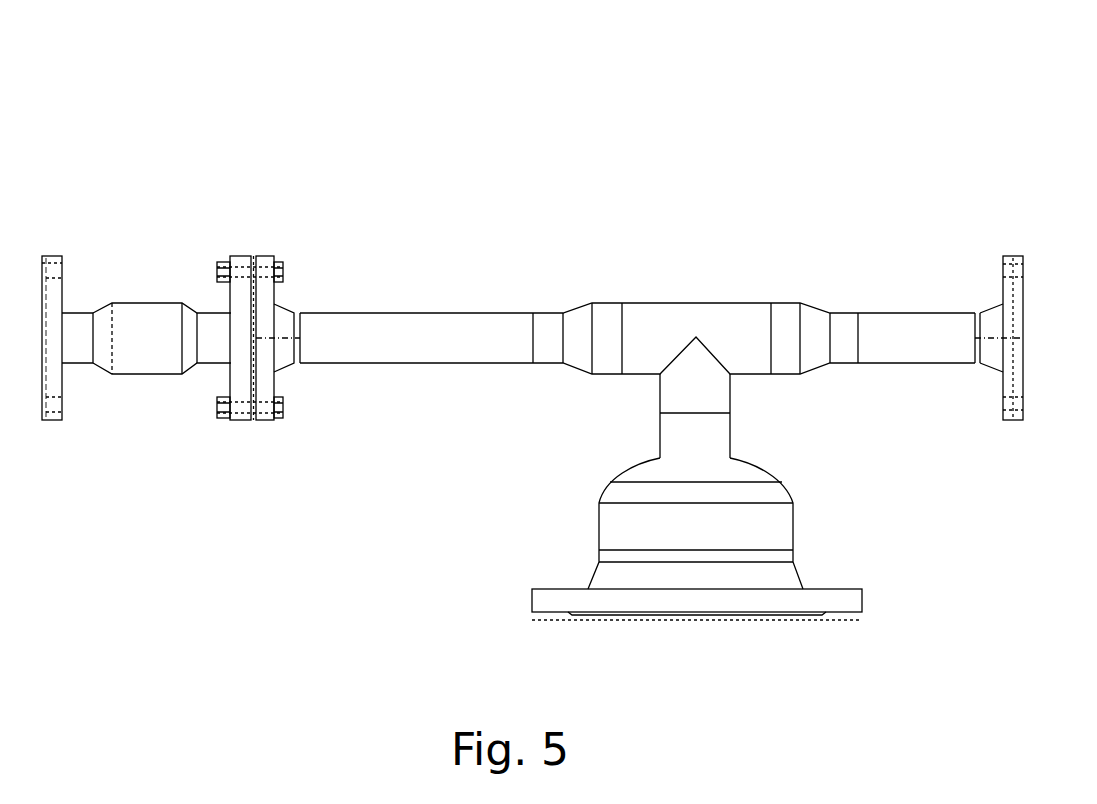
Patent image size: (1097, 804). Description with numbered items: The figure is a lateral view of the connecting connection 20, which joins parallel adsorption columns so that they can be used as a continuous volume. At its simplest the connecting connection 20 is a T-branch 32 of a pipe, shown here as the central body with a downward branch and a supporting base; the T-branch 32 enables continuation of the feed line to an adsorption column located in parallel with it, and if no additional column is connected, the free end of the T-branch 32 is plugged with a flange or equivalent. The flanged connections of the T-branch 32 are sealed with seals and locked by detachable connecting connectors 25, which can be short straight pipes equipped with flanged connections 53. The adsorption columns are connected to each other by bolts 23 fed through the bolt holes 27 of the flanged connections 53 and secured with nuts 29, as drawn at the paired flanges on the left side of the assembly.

The connecting connection 20 is at (617, 198).
The connecting connector 25 is at (149, 248).
The bolt hole 27 is at (63, 265).
The bolt 23 is at (283, 268).
The nut 29 is at (222, 264).
The T-branch 32 is at (676, 317).
The flanged connection 53 is at (52, 421).